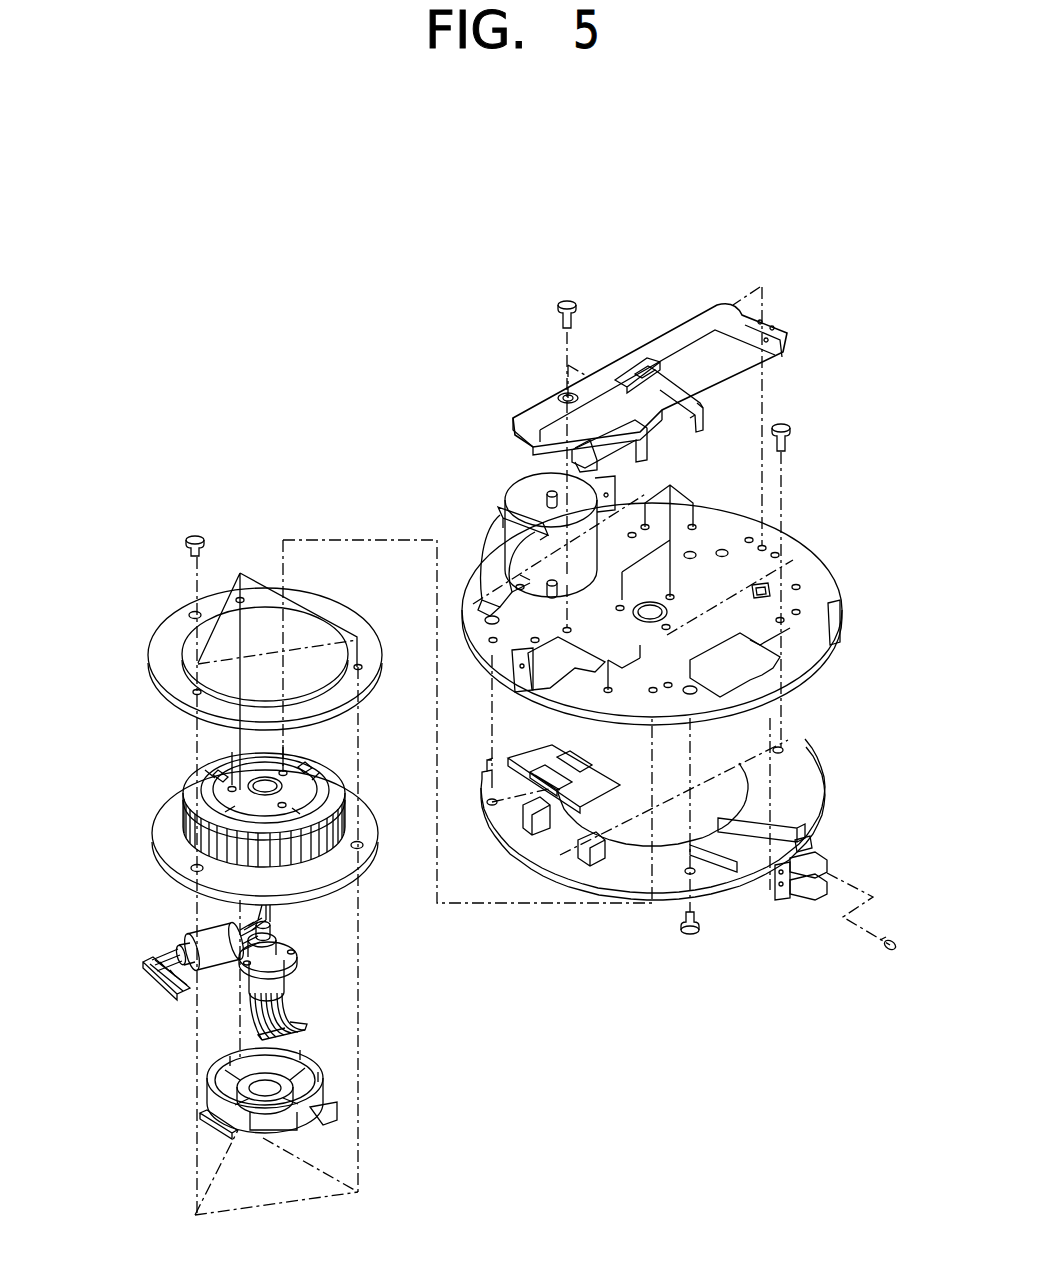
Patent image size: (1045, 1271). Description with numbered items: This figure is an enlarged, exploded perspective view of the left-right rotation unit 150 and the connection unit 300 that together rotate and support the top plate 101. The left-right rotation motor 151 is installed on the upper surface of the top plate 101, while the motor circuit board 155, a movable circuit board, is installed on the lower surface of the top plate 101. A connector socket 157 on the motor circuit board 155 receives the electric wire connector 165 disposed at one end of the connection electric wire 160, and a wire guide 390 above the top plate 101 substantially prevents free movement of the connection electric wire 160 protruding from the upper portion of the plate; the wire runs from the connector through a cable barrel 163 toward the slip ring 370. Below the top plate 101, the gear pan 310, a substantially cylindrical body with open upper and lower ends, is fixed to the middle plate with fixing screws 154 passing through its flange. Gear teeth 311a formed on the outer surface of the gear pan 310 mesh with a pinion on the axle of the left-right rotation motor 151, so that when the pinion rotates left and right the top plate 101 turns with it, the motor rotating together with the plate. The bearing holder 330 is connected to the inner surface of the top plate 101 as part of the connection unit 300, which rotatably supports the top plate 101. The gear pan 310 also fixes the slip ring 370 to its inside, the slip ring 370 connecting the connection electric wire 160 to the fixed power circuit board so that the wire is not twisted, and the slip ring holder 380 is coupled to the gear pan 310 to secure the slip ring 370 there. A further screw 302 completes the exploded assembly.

The top plate 101 is at (785, 540).
The left-right rotation unit 150 is at (480, 522).
The left-right rotation motor 151 is at (522, 497).
The fixing screws 154 is at (190, 544).
The motor circuit board 155 is at (617, 870).
The connector socket 157 is at (560, 800).
The connection electric wire 160 is at (157, 997).
The cable barrel 163 is at (213, 938).
The electric wire connector 165 is at (145, 969).
The connection unit 300 is at (125, 932).
The screw 302 is at (790, 433).
The gear pan 310 is at (367, 823).
The gear teeth 311a is at (220, 818).
The bearing holder 330 is at (232, 786).
The slip ring 370 is at (297, 940).
The slip ring holder 380 is at (323, 1093).
The wire guide 390 is at (757, 343).